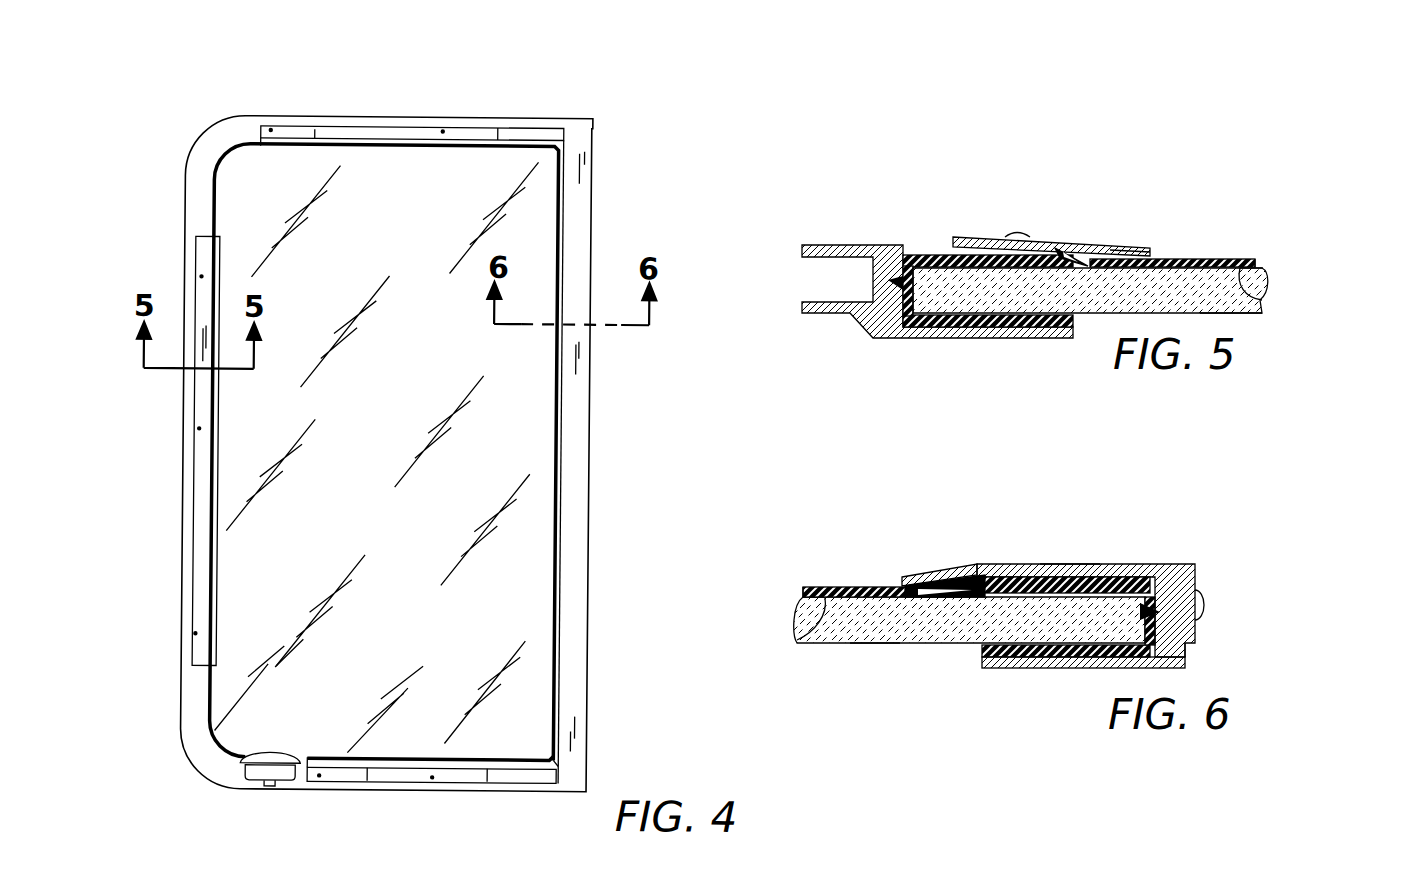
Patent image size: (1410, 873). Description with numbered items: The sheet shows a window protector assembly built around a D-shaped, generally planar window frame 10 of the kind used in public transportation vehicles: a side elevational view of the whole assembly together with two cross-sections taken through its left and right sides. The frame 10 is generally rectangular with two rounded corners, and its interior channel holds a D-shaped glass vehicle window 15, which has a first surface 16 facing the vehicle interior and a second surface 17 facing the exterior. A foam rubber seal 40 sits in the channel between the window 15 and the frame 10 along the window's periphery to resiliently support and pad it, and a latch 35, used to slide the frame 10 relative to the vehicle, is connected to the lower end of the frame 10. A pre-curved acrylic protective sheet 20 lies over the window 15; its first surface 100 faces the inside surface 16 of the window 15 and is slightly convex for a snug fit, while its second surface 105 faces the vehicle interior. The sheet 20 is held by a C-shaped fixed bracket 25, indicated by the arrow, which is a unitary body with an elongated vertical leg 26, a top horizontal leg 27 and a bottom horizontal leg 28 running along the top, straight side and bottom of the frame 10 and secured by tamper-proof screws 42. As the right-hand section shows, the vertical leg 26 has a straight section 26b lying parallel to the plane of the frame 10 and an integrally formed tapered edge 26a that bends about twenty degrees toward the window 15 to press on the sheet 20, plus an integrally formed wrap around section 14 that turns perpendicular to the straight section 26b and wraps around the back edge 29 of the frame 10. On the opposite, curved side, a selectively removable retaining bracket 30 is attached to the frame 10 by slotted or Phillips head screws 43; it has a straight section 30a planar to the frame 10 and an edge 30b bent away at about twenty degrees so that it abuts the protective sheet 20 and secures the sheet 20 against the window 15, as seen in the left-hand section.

In FIG. 4, the window frame 10 is at (217, 147).
In FIG. 5, the window frame 10 is at (830, 243).
In FIG. 6, the window frame 10 is at (1047, 668).
In FIG. 6, the wrap around section 14 is at (1200, 633).
In FIG. 5, the vehicle window 15 is at (1268, 285).
In FIG. 6, the vehicle window 15 is at (827, 643).
In FIG. 5, the first surface 16 is at (1263, 265).
In FIG. 6, the first surface 16 is at (799, 594).
In FIG. 5, the second surface 17 is at (1240, 313).
In FIG. 6, the second surface 17 is at (877, 644).
In FIG. 4, the protective sheet 20 is at (300, 183).
In FIG. 5, the protective sheet 20 is at (1265, 262).
In FIG. 6, the protective sheet 20 is at (823, 590).
In FIG. 4, the fixed bracket 25 is at (632, 167).
In FIG. 4, the vertical leg 26 is at (570, 440).
In FIG. 6, the vertical leg 26 is at (1132, 562).
In FIG. 6, the edge 26a is at (935, 575).
In FIG. 6, the straight section 26b is at (1065, 564).
In FIG. 4, the top horizontal leg 27 is at (537, 133).
In FIG. 4, the bottom horizontal leg 28 is at (515, 778).
In FIG. 6, the back edge 29 is at (1186, 655).
In FIG. 4, the retaining bracket 30 is at (185, 580).
In FIG. 5, the retaining bracket 30 is at (953, 236).
In FIG. 5, the straight section 30a is at (1070, 240).
In FIG. 5, the edge 30b is at (1122, 244).
In FIG. 4, the latch 35 is at (262, 765).
In FIG. 5, the foam rubber seal 40 is at (1080, 327).
In FIG. 6, the foam rubber seal 40 is at (982, 652).
In FIG. 4, the screws 42 is at (440, 131).
In FIG. 4, the screws 43 is at (199, 430).
In FIG. 5, the screws 43 is at (1016, 233).
In FIG. 5, the first surface 100 is at (1263, 301).
In FIG. 6, the first surface 100 is at (797, 640).
In FIG. 5, the second surface 105 is at (1200, 258).
In FIG. 6, the second surface 105 is at (880, 586).